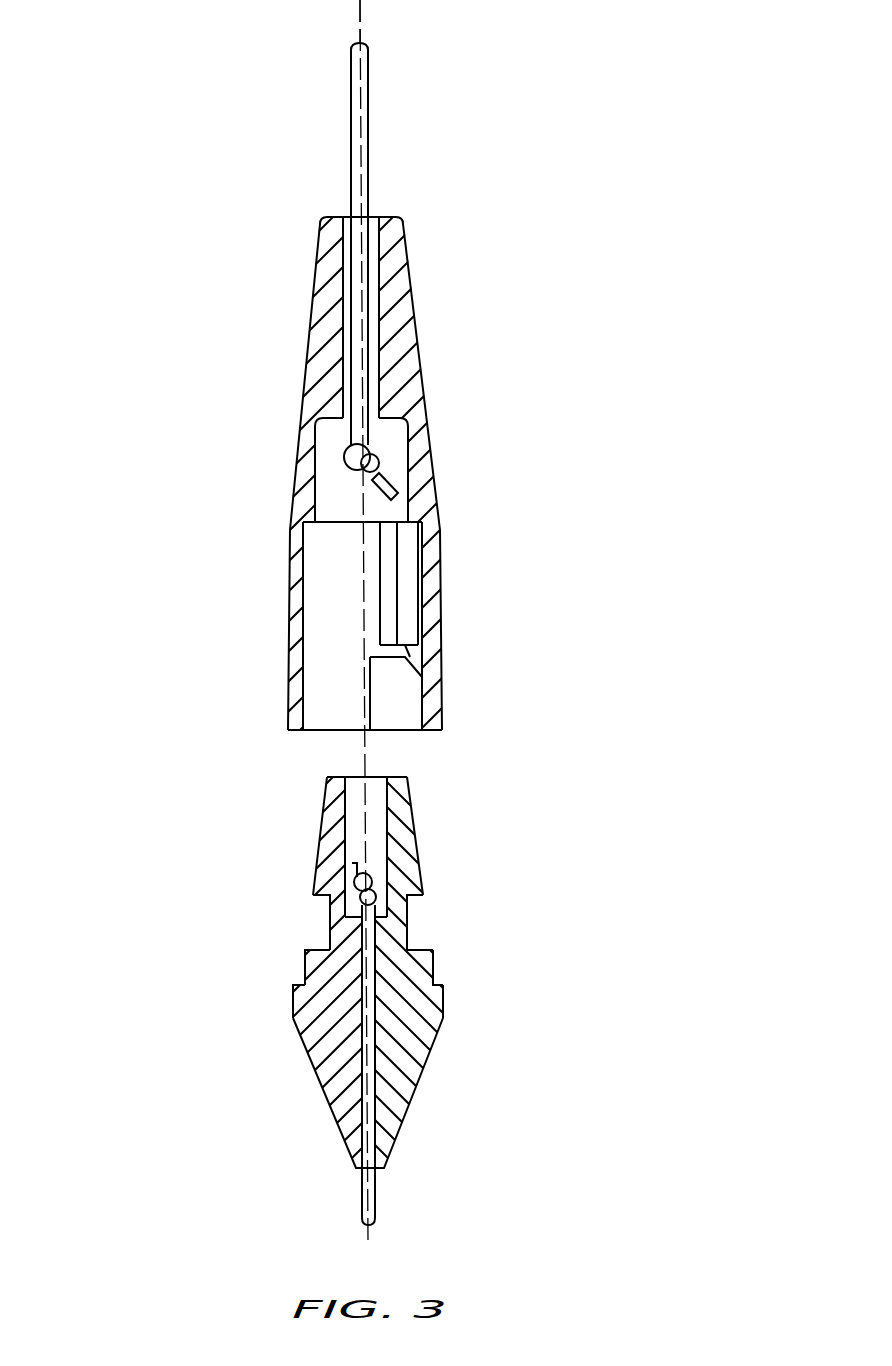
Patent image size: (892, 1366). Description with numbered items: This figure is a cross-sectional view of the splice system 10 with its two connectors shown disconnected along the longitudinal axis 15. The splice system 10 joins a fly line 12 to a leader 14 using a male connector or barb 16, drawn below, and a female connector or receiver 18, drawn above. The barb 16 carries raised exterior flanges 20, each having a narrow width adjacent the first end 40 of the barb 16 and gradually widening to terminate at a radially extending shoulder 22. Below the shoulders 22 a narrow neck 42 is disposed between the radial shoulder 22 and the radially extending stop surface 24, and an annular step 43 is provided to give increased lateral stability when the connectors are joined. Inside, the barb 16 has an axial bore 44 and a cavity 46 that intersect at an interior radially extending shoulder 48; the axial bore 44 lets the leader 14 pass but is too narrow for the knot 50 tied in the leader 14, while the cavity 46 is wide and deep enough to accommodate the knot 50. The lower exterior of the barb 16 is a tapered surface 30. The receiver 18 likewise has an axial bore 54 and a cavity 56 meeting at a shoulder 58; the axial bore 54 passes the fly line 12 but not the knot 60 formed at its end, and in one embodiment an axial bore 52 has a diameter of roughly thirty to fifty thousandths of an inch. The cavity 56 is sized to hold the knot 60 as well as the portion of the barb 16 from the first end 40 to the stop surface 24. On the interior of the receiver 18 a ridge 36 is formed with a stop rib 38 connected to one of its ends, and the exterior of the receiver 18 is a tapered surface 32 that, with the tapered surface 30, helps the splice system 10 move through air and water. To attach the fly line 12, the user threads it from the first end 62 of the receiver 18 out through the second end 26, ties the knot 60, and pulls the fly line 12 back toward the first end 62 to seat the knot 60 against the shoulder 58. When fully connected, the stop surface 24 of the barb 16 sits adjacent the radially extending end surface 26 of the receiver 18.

The splice system 10 is at (188, 562).
The fly line 12 is at (352, 158).
The leader 14 is at (361, 1202).
The longitudinal axis 15 is at (361, 13).
The male connector or barb 16 is at (550, 868).
The female connector or receiver 18 is at (492, 482).
The flange 20 is at (330, 838).
The radially extending shoulder 22 is at (322, 898).
The radially extending stop surface 24 is at (294, 980).
The radially extending end surface 26 is at (290, 731).
The tapered surface 30 is at (415, 1085).
The tapered surface 32 is at (418, 332).
The ridge 36 is at (393, 667).
The stop rib 38 is at (388, 588).
The first end 40 is at (402, 775).
The narrow neck 42 is at (328, 936).
The annular step 43 is at (425, 957).
The axial bore 44 is at (360, 1082).
The cavity 46 is at (358, 796).
The interior radially extending shoulder 48 is at (400, 930).
The knot 50 is at (348, 878).
The axial bore 52 is at (383, 1170).
The axial bore 54 is at (348, 322).
The cavity 56 is at (328, 480).
The shoulder 58 is at (313, 444).
The knot 60 is at (386, 452).
The first end 62 is at (390, 215).